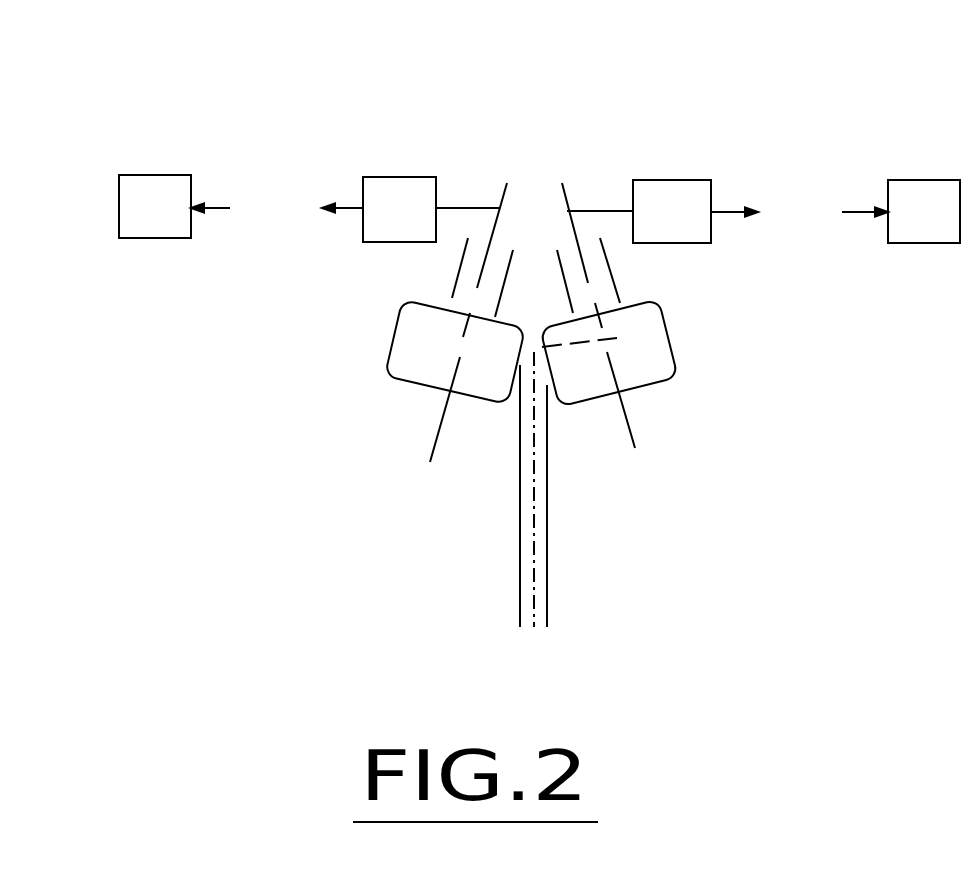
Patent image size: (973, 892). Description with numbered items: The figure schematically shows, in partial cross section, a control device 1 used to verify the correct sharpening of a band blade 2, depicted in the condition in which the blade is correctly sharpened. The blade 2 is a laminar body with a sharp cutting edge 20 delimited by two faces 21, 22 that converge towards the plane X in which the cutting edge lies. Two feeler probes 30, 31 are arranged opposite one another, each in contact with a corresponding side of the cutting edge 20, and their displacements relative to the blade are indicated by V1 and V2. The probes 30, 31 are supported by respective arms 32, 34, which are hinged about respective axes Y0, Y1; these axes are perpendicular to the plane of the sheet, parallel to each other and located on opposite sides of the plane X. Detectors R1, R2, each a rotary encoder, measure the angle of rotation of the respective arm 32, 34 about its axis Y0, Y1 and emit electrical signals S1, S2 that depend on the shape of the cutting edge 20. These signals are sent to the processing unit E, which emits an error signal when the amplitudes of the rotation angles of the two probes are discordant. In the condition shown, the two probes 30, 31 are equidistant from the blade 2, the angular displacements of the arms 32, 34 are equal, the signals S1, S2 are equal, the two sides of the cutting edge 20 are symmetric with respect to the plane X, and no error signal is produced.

The control device 1 is at (535, 134).
The band blade 2 is at (492, 487).
The cutting edge 20 is at (605, 339).
The first face 21 is at (556, 489).
The second face 22 is at (548, 492).
The first feeler probe 30 is at (405, 367).
The second feeler probe 31 is at (665, 370).
The first arm 32 is at (472, 267).
The second arm 34 is at (602, 267).
The first hinge axis Y0 is at (500, 212).
The second hinge axis Y1 is at (567, 212).
The plane of convergence X is at (535, 597).
The displacement of first probe V1 is at (388, 335).
The displacement of second probe V2 is at (683, 337).
The first signal S1 is at (277, 211).
The second signal S2 is at (799, 214).
The first detector R1 is at (399, 209).
The second detector R2 is at (672, 211).
The processing unit E is at (539, 209).